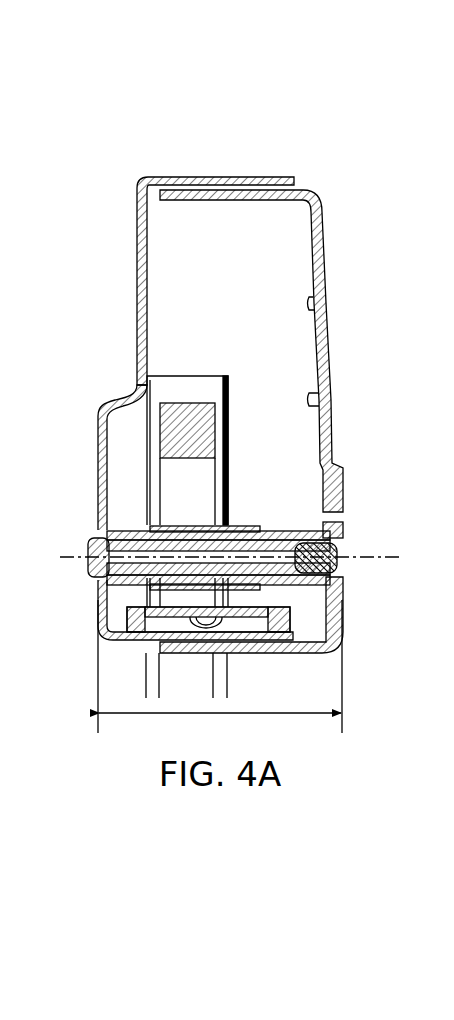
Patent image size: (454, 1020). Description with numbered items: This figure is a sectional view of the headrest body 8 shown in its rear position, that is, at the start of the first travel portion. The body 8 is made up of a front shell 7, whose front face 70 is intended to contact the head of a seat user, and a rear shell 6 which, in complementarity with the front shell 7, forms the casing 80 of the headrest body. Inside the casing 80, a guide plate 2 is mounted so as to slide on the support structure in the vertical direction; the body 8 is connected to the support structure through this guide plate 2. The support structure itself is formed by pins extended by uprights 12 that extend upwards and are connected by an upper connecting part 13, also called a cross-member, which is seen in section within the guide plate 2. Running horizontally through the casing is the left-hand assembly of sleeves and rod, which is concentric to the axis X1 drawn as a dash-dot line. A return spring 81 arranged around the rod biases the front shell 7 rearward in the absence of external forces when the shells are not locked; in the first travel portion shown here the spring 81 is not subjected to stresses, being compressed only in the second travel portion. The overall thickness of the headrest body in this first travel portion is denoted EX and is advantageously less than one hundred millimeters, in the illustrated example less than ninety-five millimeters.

The body 8 is at (390, 162).
The front shell 7 is at (132, 228).
The rear shell 6 is at (327, 228).
The casing 80 is at (338, 327).
The front face 70 is at (95, 437).
The guide plate 2 is at (185, 372).
The upper connecting part 13 is at (215, 425).
The upright 12 is at (215, 483).
The return spring 81 is at (277, 543).
The axis X1 is at (382, 553).
The thickness of the headrest body EX is at (220, 672).